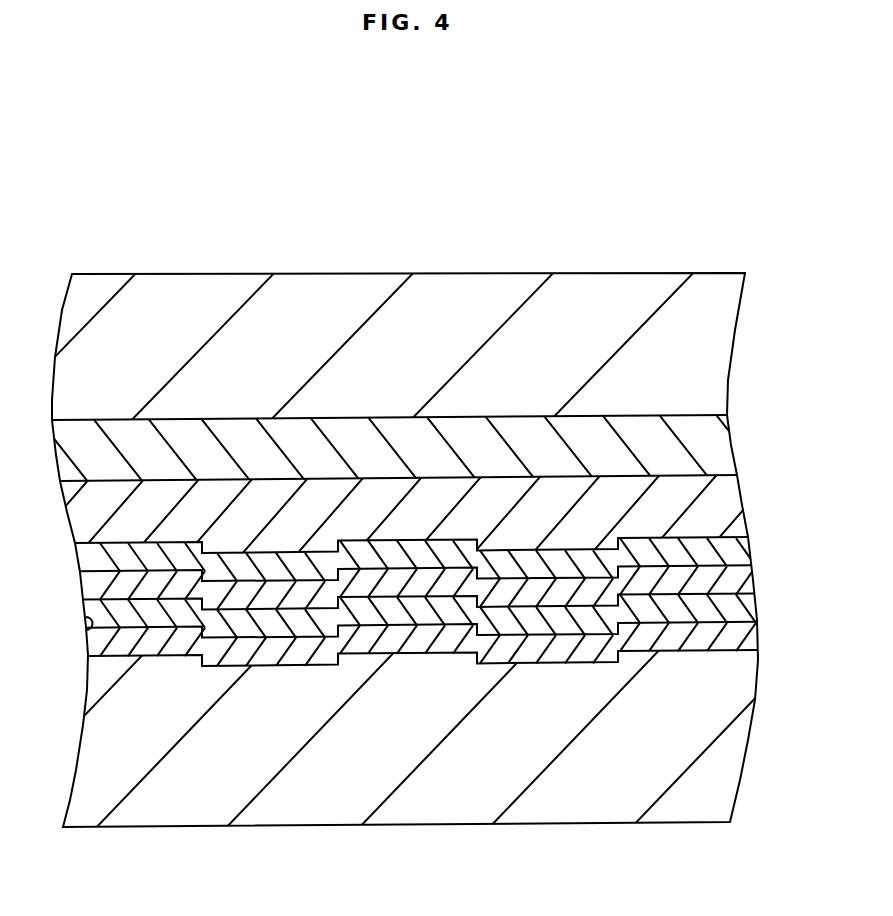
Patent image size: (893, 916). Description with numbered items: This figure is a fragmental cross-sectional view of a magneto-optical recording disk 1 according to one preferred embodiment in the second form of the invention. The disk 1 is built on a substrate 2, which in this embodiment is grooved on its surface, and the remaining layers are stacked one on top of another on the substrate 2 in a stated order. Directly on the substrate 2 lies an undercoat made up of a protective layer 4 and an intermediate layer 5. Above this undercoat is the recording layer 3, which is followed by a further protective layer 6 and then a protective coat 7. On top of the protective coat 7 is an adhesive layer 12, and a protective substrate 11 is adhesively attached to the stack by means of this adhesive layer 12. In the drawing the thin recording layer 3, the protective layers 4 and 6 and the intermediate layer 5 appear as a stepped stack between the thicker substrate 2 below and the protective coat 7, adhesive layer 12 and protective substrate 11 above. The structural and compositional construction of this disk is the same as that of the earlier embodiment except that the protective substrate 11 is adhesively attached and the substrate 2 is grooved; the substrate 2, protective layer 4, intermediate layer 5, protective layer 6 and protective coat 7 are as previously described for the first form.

The magneto-optical recording disk 1 is at (474, 257).
The substrate 2 is at (685, 810).
The recording layer 3 is at (95, 587).
The protective layer 4 is at (97, 645).
The intermediate layer 5 is at (743, 615).
The protective layer 6 is at (738, 553).
The protective coat 7 is at (718, 508).
The protective substrate 11 is at (717, 348).
The adhesive layer 12 is at (717, 452).